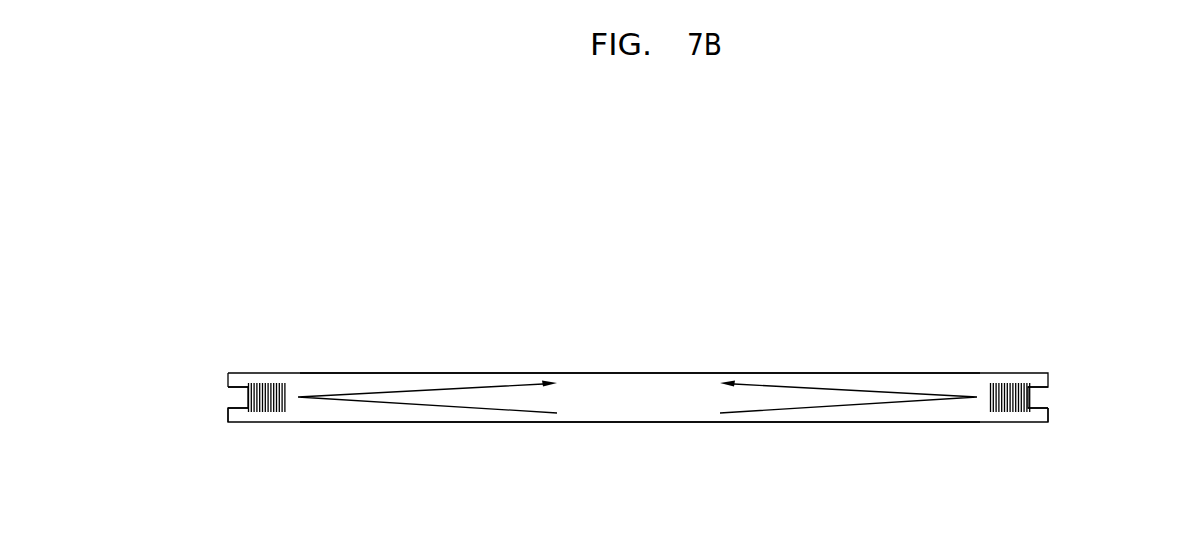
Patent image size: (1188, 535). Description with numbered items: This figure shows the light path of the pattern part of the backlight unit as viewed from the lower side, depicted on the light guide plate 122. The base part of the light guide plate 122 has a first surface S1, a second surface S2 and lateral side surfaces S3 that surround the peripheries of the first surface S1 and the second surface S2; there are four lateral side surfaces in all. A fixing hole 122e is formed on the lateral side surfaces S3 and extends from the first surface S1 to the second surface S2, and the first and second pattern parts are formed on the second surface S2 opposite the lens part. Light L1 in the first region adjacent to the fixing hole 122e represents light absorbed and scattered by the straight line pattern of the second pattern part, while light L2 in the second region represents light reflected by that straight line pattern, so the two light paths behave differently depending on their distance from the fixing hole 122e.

The light guide plate 122 is at (882, 373).
The fixing hole 122e is at (238, 405).
The first surface S1 is at (640, 373).
The second surface S2 is at (632, 422).
The lateral side surfaces S3 is at (228, 414).
The light L1 is at (275, 408).
The light L2 is at (430, 405).